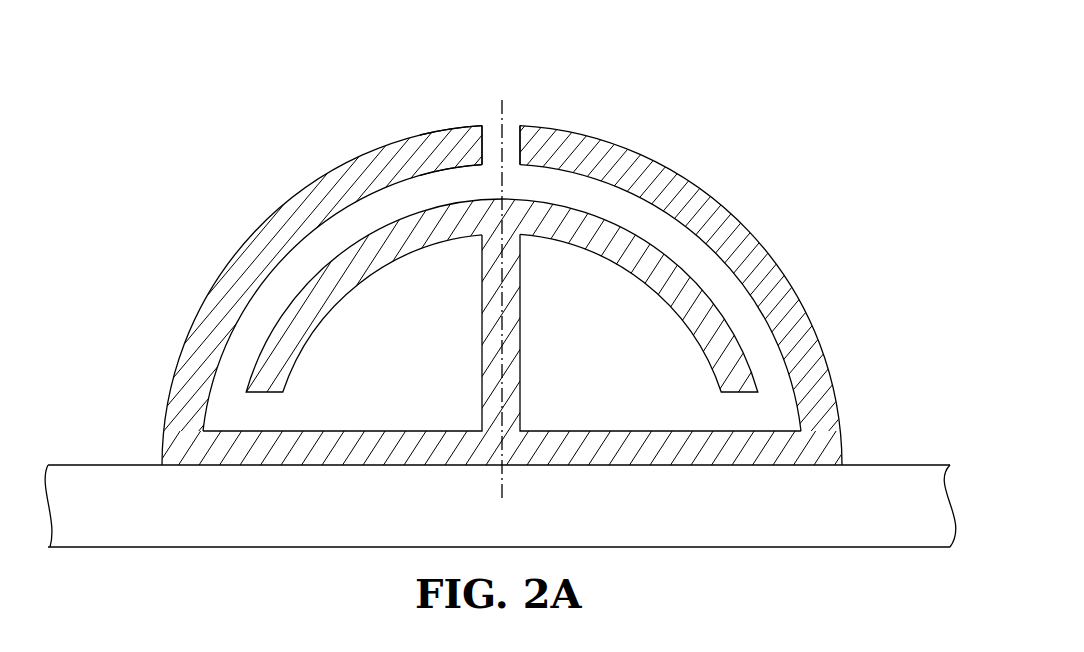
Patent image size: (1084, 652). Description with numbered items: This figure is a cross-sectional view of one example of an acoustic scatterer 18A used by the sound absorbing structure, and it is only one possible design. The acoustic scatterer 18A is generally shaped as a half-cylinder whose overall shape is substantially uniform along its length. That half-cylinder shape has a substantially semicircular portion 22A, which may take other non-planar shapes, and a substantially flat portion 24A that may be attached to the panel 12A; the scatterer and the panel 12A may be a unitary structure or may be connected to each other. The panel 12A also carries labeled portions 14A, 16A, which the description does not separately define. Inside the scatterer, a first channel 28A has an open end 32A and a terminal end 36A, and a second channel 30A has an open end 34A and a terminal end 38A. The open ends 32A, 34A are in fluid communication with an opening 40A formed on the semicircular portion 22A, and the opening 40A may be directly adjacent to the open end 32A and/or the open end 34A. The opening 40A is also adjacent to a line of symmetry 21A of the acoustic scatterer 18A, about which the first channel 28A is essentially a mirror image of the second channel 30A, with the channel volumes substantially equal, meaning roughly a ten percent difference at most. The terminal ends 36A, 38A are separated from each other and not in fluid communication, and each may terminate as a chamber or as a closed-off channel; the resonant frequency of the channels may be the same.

The panel 12A is at (87, 520).
The top surface of substrate 14A is at (111, 465).
The bottom surface of substrate 16A is at (185, 548).
The acoustic scatterer 18A is at (712, 108).
The line of symmetry 21A is at (500, 483).
The substantially semicircular portion 22A is at (283, 200).
The substantially flat portion 24A is at (598, 467).
The first channel 28A is at (257, 315).
The second channel 30A is at (668, 236).
The open end 32A is at (453, 183).
The open end 34A is at (548, 183).
The terminal end 36A is at (322, 407).
The terminal end 38A is at (665, 408).
The opening 40A is at (490, 140).